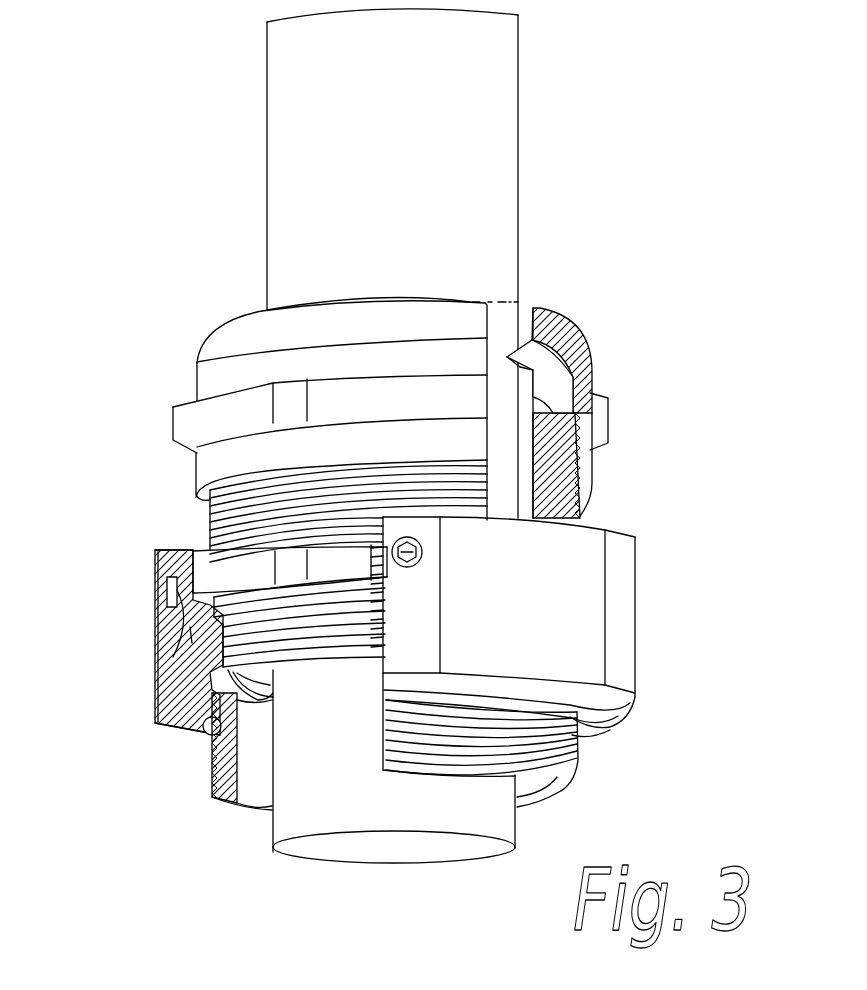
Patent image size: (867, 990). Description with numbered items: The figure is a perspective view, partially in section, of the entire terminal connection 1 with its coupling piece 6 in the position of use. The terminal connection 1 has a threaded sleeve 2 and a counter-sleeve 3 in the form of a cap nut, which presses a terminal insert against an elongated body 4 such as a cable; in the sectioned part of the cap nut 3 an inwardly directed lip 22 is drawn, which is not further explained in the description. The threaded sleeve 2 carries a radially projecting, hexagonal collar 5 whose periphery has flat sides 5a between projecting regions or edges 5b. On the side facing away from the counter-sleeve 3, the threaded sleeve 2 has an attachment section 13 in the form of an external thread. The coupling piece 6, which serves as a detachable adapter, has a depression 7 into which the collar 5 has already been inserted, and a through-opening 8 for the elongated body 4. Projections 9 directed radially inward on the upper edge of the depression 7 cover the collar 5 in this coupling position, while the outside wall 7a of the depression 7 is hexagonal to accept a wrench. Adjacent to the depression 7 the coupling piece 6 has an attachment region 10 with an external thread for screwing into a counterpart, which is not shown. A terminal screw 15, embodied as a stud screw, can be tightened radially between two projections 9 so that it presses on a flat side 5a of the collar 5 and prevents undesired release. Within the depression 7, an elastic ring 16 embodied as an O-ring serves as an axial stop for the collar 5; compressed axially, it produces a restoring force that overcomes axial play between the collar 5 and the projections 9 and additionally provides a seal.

The terminal connection 1 is at (148, 398).
The threaded sleeve 2 is at (230, 518).
The counter-sleeve 3 is at (592, 360).
The elongated body 4 is at (481, 142).
The collar 5 is at (203, 556).
The flat side 5a is at (243, 587).
The projecting regions or edges 5b is at (289, 565).
The coupling piece 6 is at (635, 648).
The depression 7 is at (187, 667).
The outside wall 7a is at (187, 660).
The through-opening 8 is at (262, 748).
The projections 9 is at (153, 568).
The attachment region 10 is at (580, 753).
The attachment section 13 is at (330, 633).
The terminal screw 15 is at (422, 548).
The elastic ring 16 is at (182, 727).
The sealing lip 22 is at (532, 367).